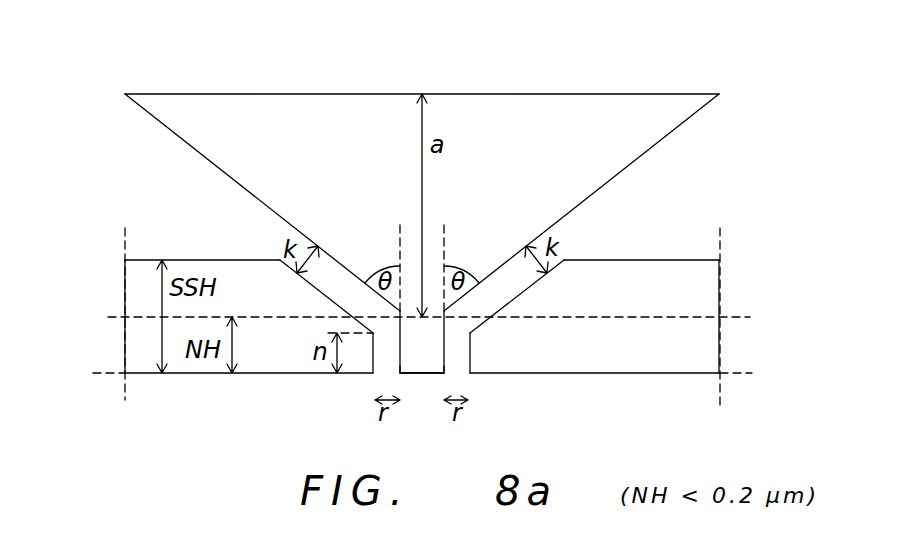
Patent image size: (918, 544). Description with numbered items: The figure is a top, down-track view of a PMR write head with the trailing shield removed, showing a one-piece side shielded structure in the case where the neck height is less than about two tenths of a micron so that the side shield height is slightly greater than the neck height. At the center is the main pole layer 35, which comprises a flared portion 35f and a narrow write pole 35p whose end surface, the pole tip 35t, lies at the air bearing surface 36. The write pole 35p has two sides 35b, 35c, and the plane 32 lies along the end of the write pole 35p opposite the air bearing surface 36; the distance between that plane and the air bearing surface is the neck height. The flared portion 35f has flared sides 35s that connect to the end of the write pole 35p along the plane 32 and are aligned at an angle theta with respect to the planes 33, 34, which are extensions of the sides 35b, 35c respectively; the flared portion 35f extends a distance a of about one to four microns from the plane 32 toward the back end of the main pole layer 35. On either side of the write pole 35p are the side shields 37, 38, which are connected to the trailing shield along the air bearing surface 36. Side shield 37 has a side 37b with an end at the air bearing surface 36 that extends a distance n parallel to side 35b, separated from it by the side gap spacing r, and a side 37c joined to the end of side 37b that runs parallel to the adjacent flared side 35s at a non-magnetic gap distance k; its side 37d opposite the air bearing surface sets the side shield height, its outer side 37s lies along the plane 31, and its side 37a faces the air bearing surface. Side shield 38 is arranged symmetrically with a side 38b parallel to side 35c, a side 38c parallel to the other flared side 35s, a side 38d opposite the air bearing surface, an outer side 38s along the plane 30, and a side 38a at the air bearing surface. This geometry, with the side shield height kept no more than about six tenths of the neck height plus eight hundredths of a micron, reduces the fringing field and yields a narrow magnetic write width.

The plane 30 is at (716, 316).
The plane 31 is at (126, 317).
The plane 32 is at (428, 318).
The plane 33 is at (399, 253).
The plane 34 is at (447, 253).
The main pole layer 35 is at (715, 84).
The flared sides 35s is at (195, 150).
The flared portion 35f is at (650, 127).
The side of write pole 35b is at (400, 357).
The side of write pole 35c is at (444, 352).
The pole tip 35t is at (425, 360).
The write pole 35p is at (432, 363).
The ABS 36 is at (423, 373).
The side shield 37 is at (135, 282).
The side of side shield 37d is at (206, 260).
The side of side shield 37c is at (320, 291).
The side of side shield 37b is at (373, 355).
The bottom surface of left side shield 37a is at (186, 374).
The side of side shield 37s is at (125, 348).
The side shield 38 is at (703, 275).
The side of side shield 38d is at (638, 260).
The side of side shield 38c is at (525, 292).
The side of side shield 38b is at (470, 352).
The bottom surface of right side shield 38a is at (660, 374).
The side of side shield 38s is at (720, 348).